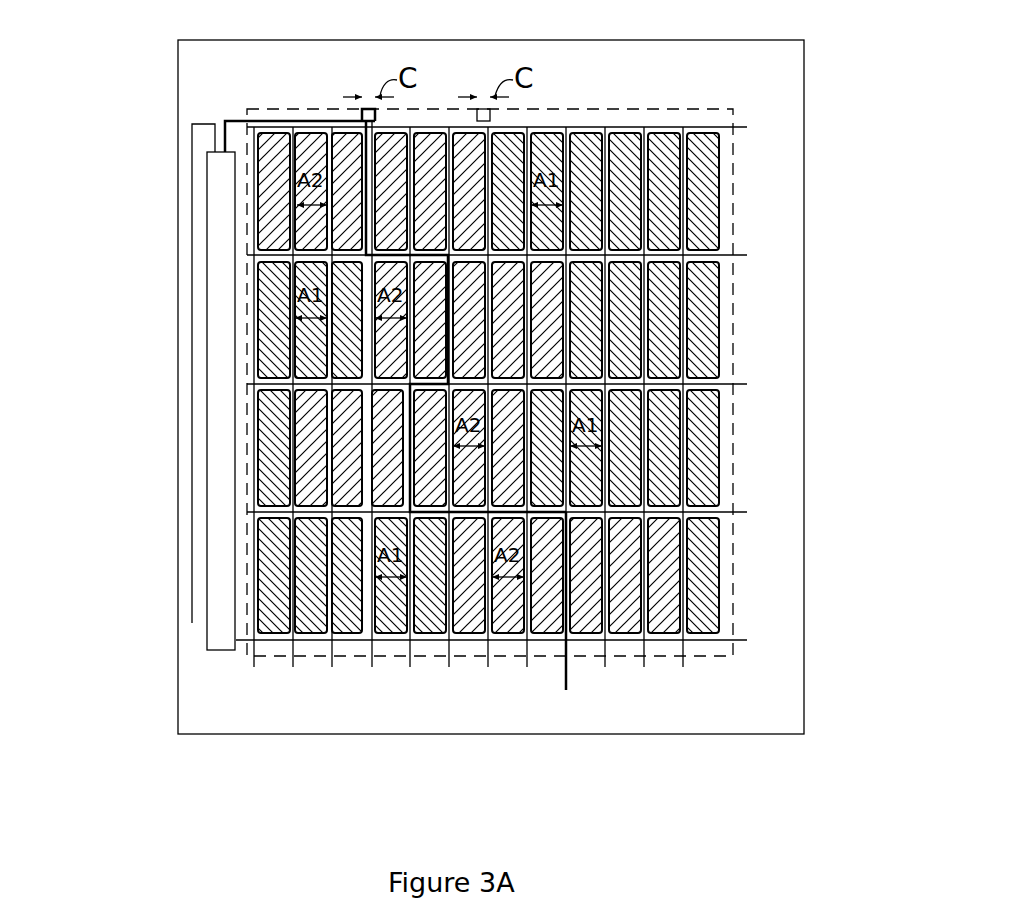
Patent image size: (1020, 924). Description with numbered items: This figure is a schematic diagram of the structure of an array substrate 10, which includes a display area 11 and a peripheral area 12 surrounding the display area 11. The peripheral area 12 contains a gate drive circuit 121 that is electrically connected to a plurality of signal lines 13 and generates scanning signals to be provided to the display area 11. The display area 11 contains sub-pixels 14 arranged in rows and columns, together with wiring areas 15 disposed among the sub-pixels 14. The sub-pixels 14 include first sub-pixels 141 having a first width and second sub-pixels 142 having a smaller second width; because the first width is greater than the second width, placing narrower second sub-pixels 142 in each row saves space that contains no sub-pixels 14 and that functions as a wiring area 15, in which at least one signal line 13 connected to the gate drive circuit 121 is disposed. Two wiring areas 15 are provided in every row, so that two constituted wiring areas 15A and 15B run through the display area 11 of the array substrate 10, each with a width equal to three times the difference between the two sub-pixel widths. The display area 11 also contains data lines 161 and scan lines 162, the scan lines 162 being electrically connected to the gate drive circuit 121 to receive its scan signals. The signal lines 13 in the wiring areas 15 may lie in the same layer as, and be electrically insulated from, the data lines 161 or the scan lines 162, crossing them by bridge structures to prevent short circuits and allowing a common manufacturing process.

The array substrate 10 is at (514, 832).
The display area 11 is at (267, 642).
The peripheral area 12 is at (222, 698).
The signal lines 13 is at (233, 121).
The sub-pixels 14 is at (416, 481).
The first sub-pixels 141 is at (262, 322).
The second sub-pixels 142 is at (262, 222).
The gate drive circuit 121 is at (215, 460).
The wiring areas 15 is at (683, 645).
The first constituted wiring area 15A is at (552, 645).
The second constituted wiring area 15B is at (697, 647).
The data lines 161 is at (600, 642).
The scan lines 162 is at (747, 384).